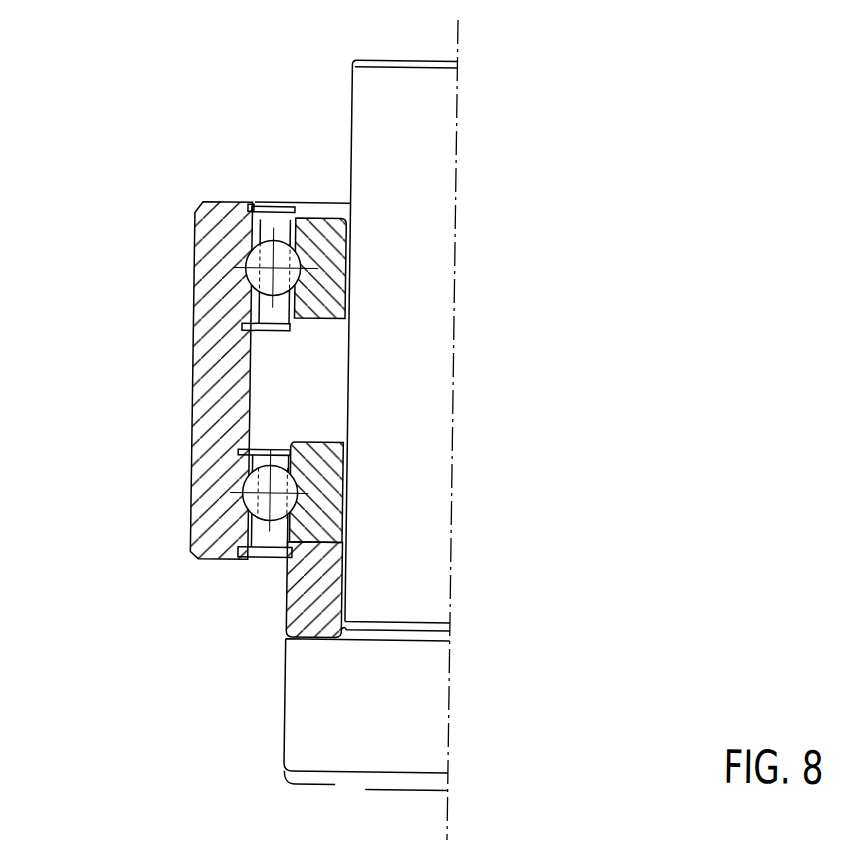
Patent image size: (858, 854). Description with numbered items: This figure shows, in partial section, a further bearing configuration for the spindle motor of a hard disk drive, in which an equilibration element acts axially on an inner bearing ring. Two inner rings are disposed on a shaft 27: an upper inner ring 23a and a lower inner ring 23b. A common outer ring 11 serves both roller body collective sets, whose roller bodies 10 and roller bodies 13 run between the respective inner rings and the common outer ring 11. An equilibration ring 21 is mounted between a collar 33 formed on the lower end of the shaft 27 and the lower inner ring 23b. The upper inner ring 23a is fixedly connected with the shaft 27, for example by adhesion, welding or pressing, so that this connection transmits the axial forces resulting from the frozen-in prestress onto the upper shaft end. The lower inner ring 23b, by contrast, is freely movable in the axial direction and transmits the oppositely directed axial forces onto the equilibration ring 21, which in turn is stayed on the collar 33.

The shaft 27 is at (388, 144).
The upper inner ring 23a is at (314, 235).
The roller bodies 10 is at (258, 258).
The common outer ring 11 is at (204, 336).
The lower inner ring 23b is at (316, 456).
The roller bodies 13 is at (258, 486).
The equilibration ring 21 is at (314, 566).
The collar 33 is at (313, 687).